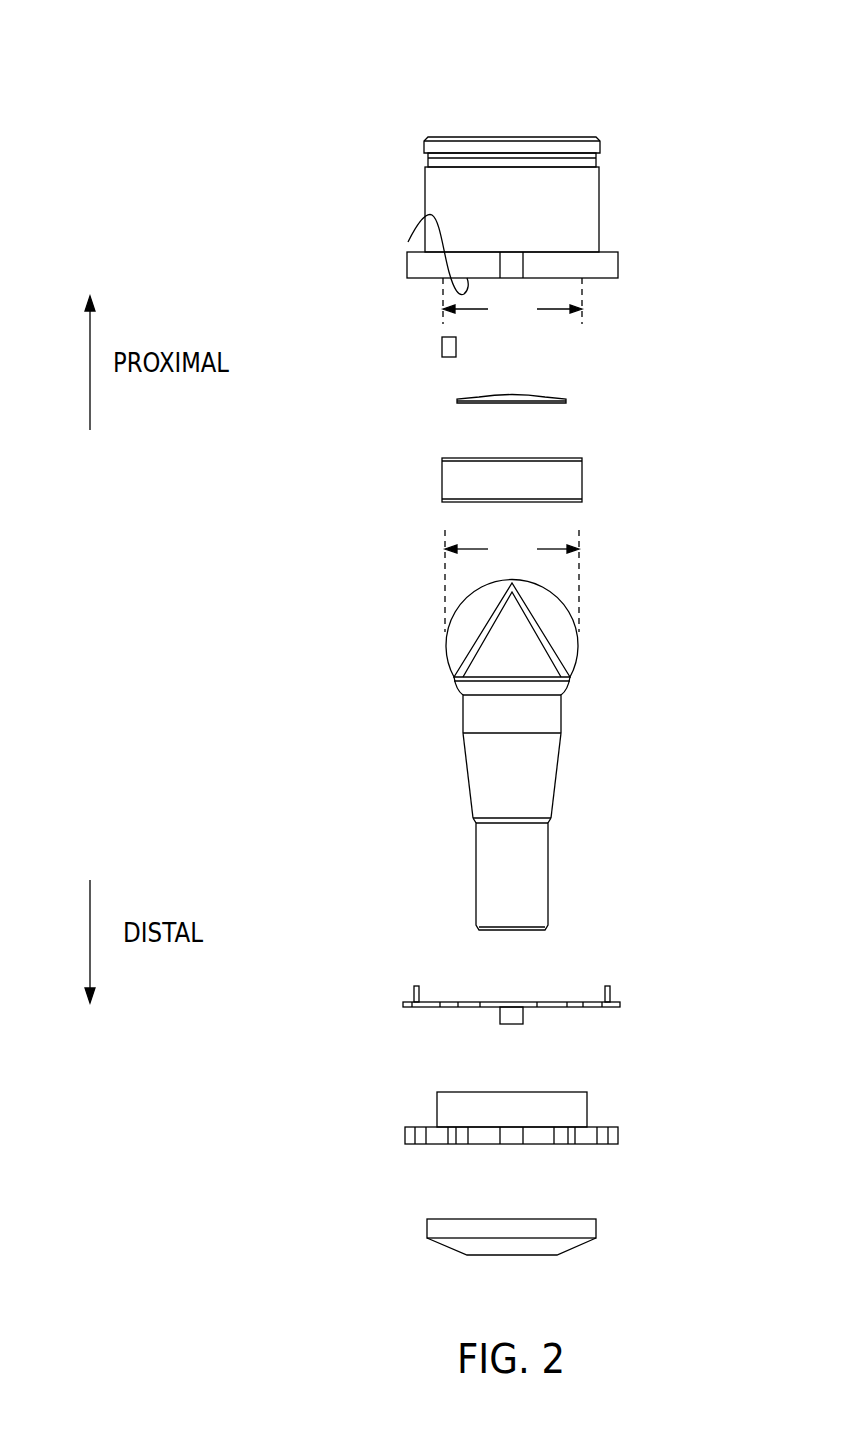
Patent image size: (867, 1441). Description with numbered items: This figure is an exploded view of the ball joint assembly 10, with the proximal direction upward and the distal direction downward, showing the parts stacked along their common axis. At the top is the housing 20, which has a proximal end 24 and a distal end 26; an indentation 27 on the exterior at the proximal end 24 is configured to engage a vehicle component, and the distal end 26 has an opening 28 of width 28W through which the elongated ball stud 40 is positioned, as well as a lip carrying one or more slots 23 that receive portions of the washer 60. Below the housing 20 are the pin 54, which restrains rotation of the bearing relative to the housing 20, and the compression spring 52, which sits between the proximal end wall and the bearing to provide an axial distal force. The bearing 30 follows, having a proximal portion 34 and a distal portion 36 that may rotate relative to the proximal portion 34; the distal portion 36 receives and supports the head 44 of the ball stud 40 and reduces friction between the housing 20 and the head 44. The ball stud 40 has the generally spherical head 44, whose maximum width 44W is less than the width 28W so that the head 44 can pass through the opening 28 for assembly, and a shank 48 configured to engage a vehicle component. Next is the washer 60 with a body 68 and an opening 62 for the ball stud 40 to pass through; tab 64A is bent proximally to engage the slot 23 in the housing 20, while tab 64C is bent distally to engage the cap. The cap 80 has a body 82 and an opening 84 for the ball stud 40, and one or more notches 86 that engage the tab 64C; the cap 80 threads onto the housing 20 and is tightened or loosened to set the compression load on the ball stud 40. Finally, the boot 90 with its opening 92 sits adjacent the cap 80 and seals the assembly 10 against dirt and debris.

The ball joint assembly 10 is at (281, 63).
The housing 20 is at (368, 195).
The proximal end 24 is at (619, 133).
The indentation 27 is at (600, 158).
The slot 23 is at (525, 262).
The distal end 26 is at (650, 278).
The opening 28 is at (408, 242).
The width 28W is at (512, 301).
The pin 54 is at (442, 347).
The compression spring 52 is at (457, 401).
The bearing 30 is at (415, 475).
The proximal portion 34 is at (600, 455).
The distal portion 36 is at (600, 503).
The ball stud 40 is at (358, 595).
The head 44 is at (453, 652).
The maximum width 44W is at (512, 581).
The shank 48 is at (572, 845).
The washer 60 is at (358, 1003).
The opening 62 is at (487, 1002).
The body 68 is at (447, 1007).
The tab 64A is at (612, 988).
The tab 64C is at (524, 1020).
The cap 80 is at (358, 1103).
The opening 84 is at (562, 1092).
The body 82 is at (605, 1127).
The notch 86 is at (540, 1144).
The boot 90 is at (358, 1241).
The opening 92 is at (487, 1219).